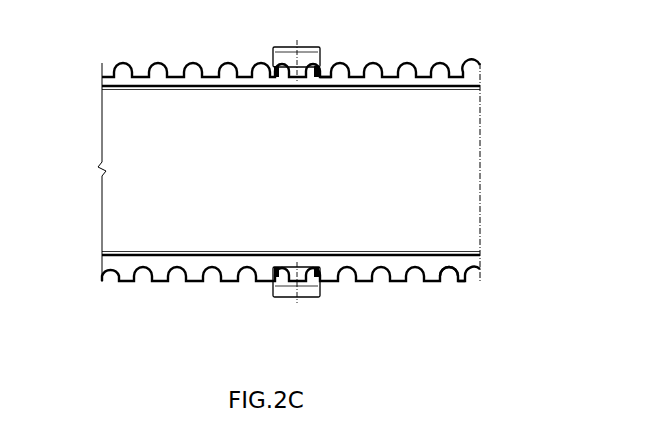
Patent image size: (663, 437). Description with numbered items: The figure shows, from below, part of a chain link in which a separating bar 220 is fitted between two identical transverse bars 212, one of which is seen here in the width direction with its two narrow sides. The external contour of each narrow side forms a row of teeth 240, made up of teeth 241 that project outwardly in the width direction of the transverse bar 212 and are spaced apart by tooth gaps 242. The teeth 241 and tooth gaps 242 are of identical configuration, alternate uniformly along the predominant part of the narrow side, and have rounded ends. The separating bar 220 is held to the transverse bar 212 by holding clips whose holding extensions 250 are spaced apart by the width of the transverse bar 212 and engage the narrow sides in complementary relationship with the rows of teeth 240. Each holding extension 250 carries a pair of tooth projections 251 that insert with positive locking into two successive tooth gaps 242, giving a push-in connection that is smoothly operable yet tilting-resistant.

The transverse bar 212 is at (468, 207).
The separating bar 220 is at (273, 50).
The row of teeth 240 is at (470, 65).
The tooth 241 is at (470, 280).
The tooth gap 242 is at (455, 278).
The holding extension 250 is at (319, 47).
The tooth projection 251 is at (328, 76).